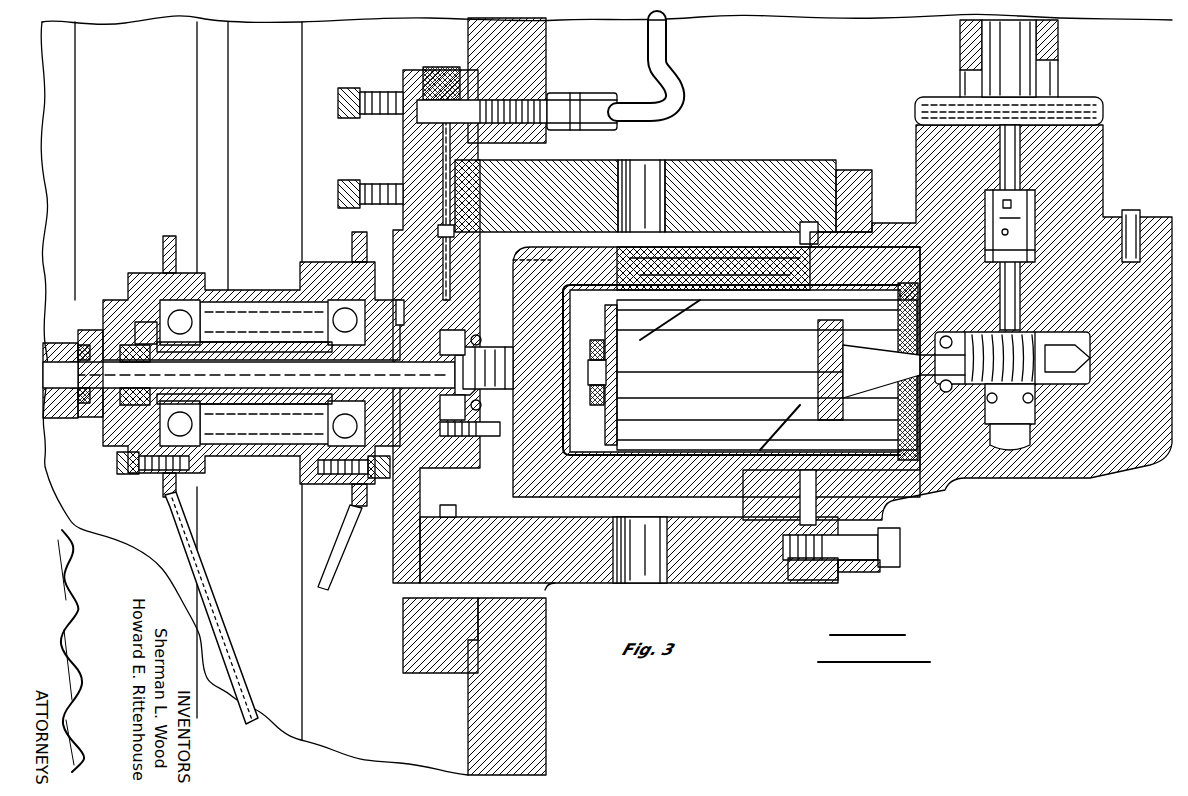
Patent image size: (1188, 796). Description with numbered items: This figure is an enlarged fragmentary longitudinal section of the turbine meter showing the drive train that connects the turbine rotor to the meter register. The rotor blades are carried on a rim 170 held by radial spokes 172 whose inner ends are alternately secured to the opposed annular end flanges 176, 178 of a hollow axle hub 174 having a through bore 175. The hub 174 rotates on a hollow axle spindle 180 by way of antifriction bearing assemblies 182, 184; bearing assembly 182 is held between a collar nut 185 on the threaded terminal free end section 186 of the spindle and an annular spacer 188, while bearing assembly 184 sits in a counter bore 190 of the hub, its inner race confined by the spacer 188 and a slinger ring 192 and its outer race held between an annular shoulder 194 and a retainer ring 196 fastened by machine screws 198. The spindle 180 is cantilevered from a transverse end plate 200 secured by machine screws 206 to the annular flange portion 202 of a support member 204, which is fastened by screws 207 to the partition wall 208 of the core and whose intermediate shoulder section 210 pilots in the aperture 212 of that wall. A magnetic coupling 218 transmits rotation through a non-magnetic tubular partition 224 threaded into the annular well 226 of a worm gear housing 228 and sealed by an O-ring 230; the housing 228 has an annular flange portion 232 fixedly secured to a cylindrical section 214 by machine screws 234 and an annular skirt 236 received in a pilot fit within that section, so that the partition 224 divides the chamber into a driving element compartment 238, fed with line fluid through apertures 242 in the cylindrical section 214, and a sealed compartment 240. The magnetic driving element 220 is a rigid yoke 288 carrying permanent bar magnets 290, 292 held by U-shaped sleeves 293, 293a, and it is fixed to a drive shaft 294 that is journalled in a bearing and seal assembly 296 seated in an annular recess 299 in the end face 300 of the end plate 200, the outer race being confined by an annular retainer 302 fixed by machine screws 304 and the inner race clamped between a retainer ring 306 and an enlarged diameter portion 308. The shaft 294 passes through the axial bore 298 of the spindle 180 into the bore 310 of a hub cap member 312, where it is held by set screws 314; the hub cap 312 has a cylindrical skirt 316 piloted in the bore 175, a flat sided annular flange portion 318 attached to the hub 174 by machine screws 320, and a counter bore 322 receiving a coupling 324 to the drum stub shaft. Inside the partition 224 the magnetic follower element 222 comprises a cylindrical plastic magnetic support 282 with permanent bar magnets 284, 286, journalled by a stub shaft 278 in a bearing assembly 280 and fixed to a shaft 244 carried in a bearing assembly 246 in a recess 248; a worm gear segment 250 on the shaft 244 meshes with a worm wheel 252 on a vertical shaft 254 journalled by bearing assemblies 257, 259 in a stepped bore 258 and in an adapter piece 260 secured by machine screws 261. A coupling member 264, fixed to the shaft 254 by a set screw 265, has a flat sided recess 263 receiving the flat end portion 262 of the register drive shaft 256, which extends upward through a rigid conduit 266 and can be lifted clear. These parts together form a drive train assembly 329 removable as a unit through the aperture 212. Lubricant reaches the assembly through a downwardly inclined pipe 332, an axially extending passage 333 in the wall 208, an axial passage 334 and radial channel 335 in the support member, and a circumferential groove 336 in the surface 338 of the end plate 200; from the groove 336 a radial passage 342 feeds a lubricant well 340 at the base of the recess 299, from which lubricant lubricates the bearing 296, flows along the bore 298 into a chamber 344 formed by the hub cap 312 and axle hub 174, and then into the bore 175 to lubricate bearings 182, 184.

The rim 170 is at (300, 45).
The spokes 172 is at (232, 655).
The axle hub 174 is at (243, 288).
The through bore 175 is at (262, 300).
The annular end flange 176 is at (176, 250).
The annular end flange 178 is at (350, 245).
The axle spindle 180 is at (325, 428).
The bearing assembly 182 is at (200, 345).
The bearing assembly 184 is at (325, 318).
The collar nut 185 is at (182, 352).
The threaded terminal free end section 186 is at (122, 358).
The annular spacer 188 is at (262, 375).
The counter bore 190 is at (333, 300).
The slinger ring 192 is at (416, 310).
The annular shoulder 194 is at (318, 467).
The retainer ring 196 is at (416, 290).
The machine screws 198 is at (362, 506).
The end plate 200 is at (425, 545).
The annular flange portion 202 is at (403, 135).
The support member 204 is at (403, 80).
The machine screws 206 is at (355, 190).
The screws 207 is at (355, 96).
The partition wall 208 is at (468, 42).
The intermediate shoulder section 210 is at (508, 598).
The aperture 212 is at (552, 590).
The housing section 214 is at (790, 165).
The magnetic coupling 218 is at (590, 200).
The magnetic driving element 220 is at (558, 228).
The magnetic follower element 222 is at (780, 450).
The non-magnetic tubular partition 224 is at (612, 440).
The annular well 226 is at (895, 465).
The worm gear housing 228 is at (1080, 488).
The O-ring 230 is at (822, 495).
The annular flange portion 232 is at (852, 172).
The machine screws 234 is at (900, 560).
The annular skirt 236 is at (825, 222).
The driving element compartment 238 is at (505, 232).
The sealed compartment 240 is at (884, 415).
The apertures 242 is at (660, 165).
The shaft 244 is at (866, 358).
The bearing assembly 246 is at (948, 336).
The recess 248 is at (960, 400).
The worm gear segment 250 is at (975, 432).
The worm wheel 252 is at (1070, 345).
The shaft 254 is at (1022, 320).
The register drive shaft 256 is at (1000, 40).
The bearing assembly 257 is at (1037, 410).
The stepped bore 258 is at (1032, 440).
The bearing assembly 259 is at (975, 240).
The adapter piece 260 is at (1103, 122).
The machine screws 261 is at (1131, 212).
The end portion 262 is at (1012, 190).
The flat sided recess 263 is at (1020, 218).
The coupling member 264 is at (1012, 203).
The set screw 265 is at (1010, 232).
The rigid conduit 266 is at (1060, 42).
The stub shaft 278 is at (606, 375).
The bearing assembly 280 is at (605, 357).
The magnetic support 282 is at (843, 335).
The permanent bar magnet 284 is at (780, 415).
The permanent bar magnet 286 is at (685, 320).
The yoke 288 is at (518, 258).
The permanent bar magnet 290 is at (752, 278).
The permanent bar magnet 292 is at (706, 497).
The U-shaped sleeve 293 is at (715, 247).
The U-shaped sleeve 293a is at (660, 500).
The drive shaft 294 is at (440, 400).
The bearing and seal assembly 296 is at (512, 395).
The axial bore 298 is at (300, 360).
The annular recess 299 is at (440, 428).
The end face 300 is at (470, 470).
The annular retainer 302 is at (500, 312).
The machine screws 304 is at (512, 432).
The retainer ring 306 is at (441, 375).
The enlarged diameter portion 308 is at (515, 352).
The bore 310 is at (100, 440).
The hub cap member 312 is at (112, 300).
The set screws 314 is at (88, 345).
The cylindrical skirt 316 is at (148, 322).
The flange portion 318 is at (135, 273).
The machine screws 320 is at (125, 475).
The counter bore 322 is at (52, 343).
The coupling 324 is at (52, 372).
The drive train assembly 329 is at (808, 585).
The pipe 332 is at (668, 42).
The passage 333 is at (548, 95).
The axial passage 334 is at (478, 98).
The channel 335 is at (450, 183).
The circumferential groove 336 is at (455, 232).
The surface 338 is at (478, 520).
The lubricant well 340 is at (440, 340).
The radial passage 342 is at (440, 285).
The chamber 344 is at (120, 446).